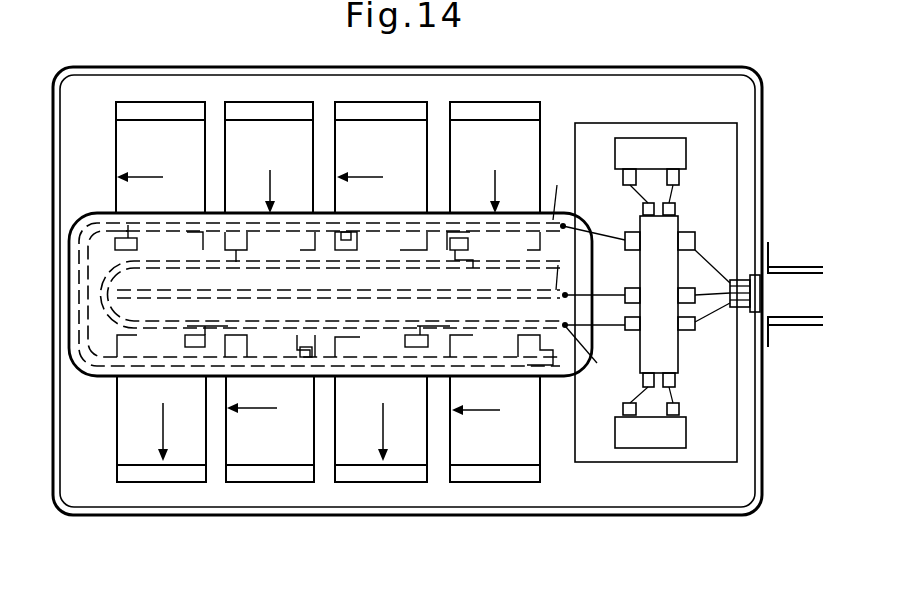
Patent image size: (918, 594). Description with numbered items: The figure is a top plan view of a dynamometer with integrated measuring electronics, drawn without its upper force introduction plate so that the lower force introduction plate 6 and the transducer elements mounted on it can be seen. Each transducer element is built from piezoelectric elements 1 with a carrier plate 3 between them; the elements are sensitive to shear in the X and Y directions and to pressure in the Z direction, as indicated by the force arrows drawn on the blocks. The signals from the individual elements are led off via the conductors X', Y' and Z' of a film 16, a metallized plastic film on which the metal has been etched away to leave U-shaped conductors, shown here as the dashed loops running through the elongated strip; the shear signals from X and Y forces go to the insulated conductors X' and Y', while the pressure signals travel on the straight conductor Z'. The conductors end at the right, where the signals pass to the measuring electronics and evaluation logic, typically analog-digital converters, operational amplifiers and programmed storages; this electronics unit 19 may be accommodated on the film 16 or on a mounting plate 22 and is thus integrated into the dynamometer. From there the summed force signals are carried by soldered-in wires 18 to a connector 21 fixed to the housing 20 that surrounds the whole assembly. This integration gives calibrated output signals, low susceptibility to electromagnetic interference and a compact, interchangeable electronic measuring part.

The piezoelectric element 1 is at (193, 130).
The carrier plate 3 is at (152, 108).
The force introduction plate 6 is at (603, 93).
The film 16 is at (563, 347).
The wires 18 is at (735, 305).
The electronic circuit unit 19 is at (665, 352).
The housing 20 is at (730, 77).
The connector 21 is at (800, 262).
The mounting plate 22 is at (712, 175).